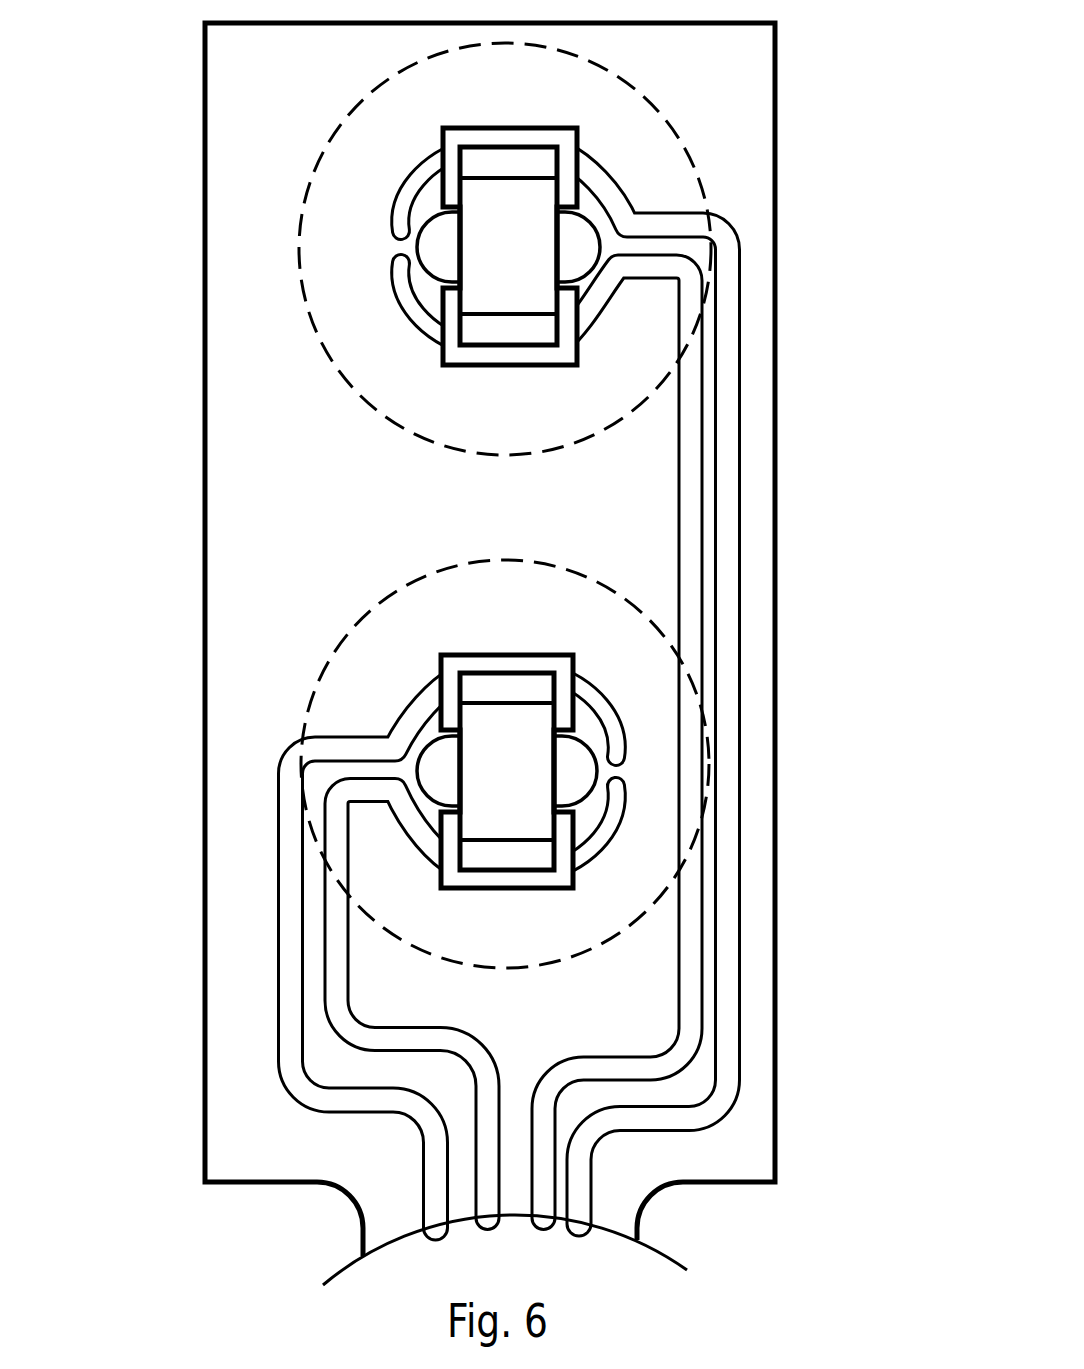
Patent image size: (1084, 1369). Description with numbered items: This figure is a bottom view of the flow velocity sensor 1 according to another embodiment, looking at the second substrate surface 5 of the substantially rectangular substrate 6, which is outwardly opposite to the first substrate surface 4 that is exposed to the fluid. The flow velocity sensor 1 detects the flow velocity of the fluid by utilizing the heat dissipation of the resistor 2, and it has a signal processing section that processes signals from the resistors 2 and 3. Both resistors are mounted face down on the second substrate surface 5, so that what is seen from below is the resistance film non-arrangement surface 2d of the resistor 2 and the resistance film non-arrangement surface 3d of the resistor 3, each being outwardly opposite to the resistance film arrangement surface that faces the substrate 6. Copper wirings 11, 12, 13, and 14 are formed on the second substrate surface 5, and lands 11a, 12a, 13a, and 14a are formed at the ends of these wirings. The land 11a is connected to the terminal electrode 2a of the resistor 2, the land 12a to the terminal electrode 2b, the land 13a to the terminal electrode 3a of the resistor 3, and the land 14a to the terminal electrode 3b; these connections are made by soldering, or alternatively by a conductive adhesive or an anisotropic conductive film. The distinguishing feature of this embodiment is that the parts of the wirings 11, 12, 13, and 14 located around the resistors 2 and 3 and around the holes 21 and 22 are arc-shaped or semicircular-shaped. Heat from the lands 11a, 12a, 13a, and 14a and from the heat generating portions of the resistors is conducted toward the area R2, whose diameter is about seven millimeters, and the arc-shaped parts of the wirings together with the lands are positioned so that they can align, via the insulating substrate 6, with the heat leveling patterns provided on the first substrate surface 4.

The flow velocity sensor 1 is at (845, 150).
The resistor 2 is at (460, 192).
The terminal electrode 2a is at (517, 160).
The terminal electrode 2b is at (538, 333).
The resistance film non-arrangement surface 2d is at (483, 300).
The resistor 3 is at (463, 821).
The terminal electrode 3a is at (522, 683).
The terminal electrode 3b is at (522, 860).
The resistance film non-arrangement surface 3d is at (478, 717).
The first substrate surface 4 is at (247, 680).
The second substrate surface 5 is at (405, 600).
The substrate 6 is at (775, 531).
The wiring 11 is at (718, 220).
The land 11a is at (477, 140).
The wiring 12 is at (688, 402).
The land 12a is at (470, 353).
The wiring 13 is at (285, 921).
The land 13a is at (523, 663).
The wiring 14 is at (330, 965).
The land 14a is at (523, 878).
The hole 21 is at (417, 247).
The hole 22 is at (410, 771).
The area R2 is at (335, 94).